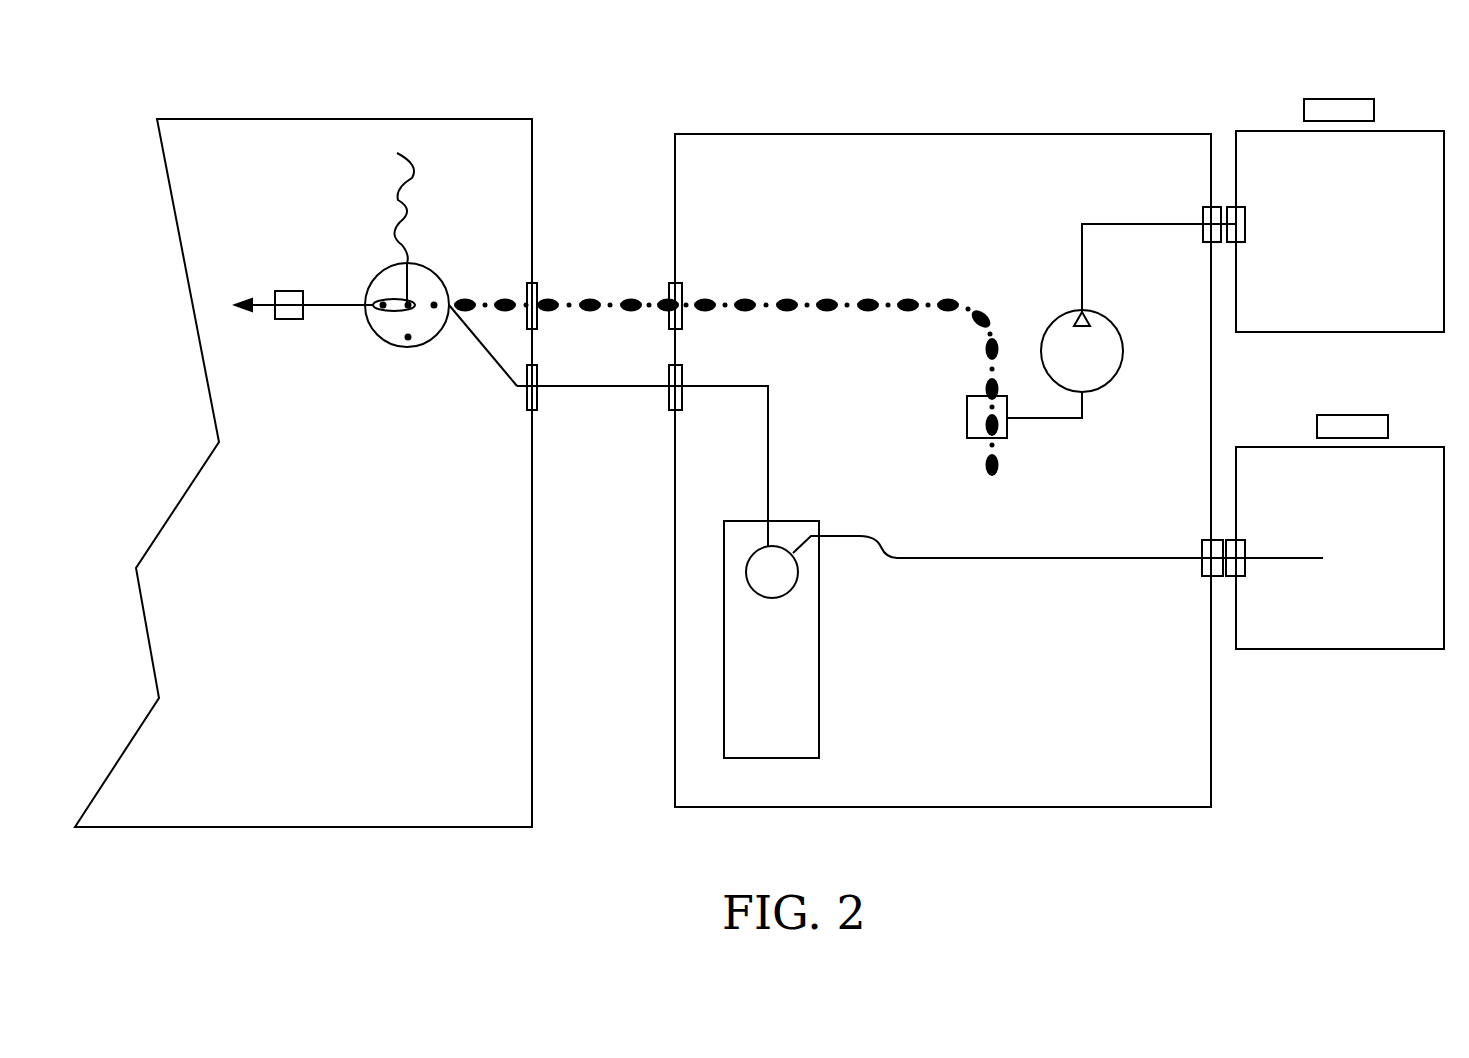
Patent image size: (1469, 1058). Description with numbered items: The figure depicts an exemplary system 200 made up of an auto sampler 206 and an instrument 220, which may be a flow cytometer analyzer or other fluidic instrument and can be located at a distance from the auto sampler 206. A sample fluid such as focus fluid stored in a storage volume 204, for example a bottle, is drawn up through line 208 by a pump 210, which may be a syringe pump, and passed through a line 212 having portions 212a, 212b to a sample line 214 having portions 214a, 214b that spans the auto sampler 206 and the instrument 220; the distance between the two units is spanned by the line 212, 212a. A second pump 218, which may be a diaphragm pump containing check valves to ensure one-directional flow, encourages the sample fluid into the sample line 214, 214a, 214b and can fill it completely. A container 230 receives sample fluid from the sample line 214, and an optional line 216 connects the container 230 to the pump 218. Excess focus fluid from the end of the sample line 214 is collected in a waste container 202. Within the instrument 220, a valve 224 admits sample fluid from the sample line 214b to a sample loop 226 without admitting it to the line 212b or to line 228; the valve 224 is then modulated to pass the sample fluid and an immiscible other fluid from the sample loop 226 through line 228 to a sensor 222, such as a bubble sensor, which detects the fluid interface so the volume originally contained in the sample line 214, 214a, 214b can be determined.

The system 200 is at (608, 68).
The waste container 202 is at (1285, 131).
The storage volume 204 is at (1285, 447).
The auto sampler 206 is at (1171, 783).
The line 208 is at (999, 560).
The pump 210 is at (821, 662).
The line 212 is at (768, 424).
The line portion 212a is at (569, 390).
The line portion 212b is at (483, 353).
The sample line 214 is at (823, 298).
The sample line portion 214a is at (560, 300).
The sample line portion 214b is at (458, 298).
The line 216 is at (1055, 418).
The pump 218 is at (1052, 329).
The instrument 220 is at (184, 810).
The sensor 222 is at (280, 290).
The valve 224 is at (372, 330).
The sample loop 226 is at (397, 172).
The line 228 is at (332, 300).
The container 230 is at (967, 418).